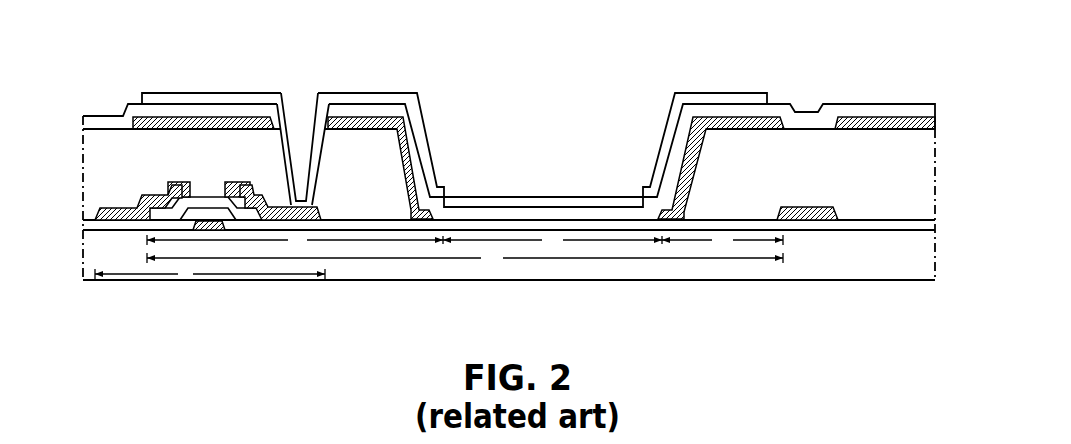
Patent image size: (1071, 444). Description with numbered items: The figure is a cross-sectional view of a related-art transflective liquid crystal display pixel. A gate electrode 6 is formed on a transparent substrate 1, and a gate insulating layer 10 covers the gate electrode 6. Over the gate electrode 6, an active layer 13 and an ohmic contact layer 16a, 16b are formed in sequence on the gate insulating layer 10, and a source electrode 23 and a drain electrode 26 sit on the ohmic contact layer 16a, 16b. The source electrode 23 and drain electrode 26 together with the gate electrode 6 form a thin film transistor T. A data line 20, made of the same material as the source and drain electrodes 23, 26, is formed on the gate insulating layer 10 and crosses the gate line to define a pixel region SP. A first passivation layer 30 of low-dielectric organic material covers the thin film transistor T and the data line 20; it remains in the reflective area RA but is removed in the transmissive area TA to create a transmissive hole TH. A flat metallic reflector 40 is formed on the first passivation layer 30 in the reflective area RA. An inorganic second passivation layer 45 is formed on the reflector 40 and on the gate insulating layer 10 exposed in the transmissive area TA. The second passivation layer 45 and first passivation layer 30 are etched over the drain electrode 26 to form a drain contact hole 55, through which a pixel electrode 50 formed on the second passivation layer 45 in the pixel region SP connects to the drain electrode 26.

The transparent substrate 1 is at (929, 252).
The gate electrode 6 is at (212, 231).
The gate insulating layer 10 is at (367, 228).
The active layer 13 is at (208, 203).
The ohmic contact layer 16a is at (176, 190).
The ohmic contact layer 16b is at (252, 190).
The data line 20 is at (805, 206).
The source electrode 23 is at (146, 195).
The drain electrode 26 is at (319, 206).
The first passivation layer 30 is at (105, 137).
The reflector 40 is at (203, 123).
The second passivation layer 45 is at (252, 110).
The pixel electrode 50 is at (723, 97).
The drain contact hole 55 is at (301, 100).
The transmissive hole TH is at (531, 115).
The reflective area RA is at (465, 240).
The transmissive area TA is at (552, 240).
The pixel region SP is at (465, 258).
The thin film transistor T is at (210, 274).